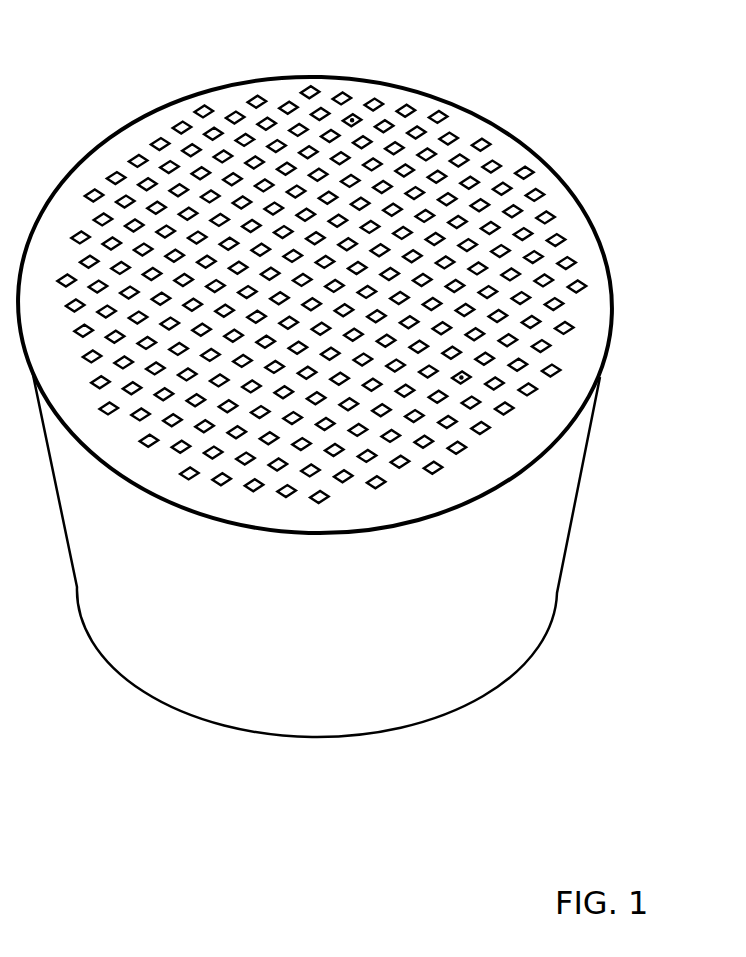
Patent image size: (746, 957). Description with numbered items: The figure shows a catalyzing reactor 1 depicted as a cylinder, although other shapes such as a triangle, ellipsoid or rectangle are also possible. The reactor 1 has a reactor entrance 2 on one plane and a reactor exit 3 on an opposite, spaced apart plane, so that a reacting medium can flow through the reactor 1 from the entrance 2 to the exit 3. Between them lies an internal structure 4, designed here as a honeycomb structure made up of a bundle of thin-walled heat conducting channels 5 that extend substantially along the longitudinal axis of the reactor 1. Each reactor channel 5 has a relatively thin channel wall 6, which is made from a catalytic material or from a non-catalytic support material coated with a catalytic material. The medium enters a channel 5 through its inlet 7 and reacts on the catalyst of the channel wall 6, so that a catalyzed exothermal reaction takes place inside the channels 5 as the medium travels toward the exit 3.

The catalyzing reactor 1 is at (363, 411).
The reactor entrance 2 is at (467, 135).
The reactor exit 3 is at (205, 720).
The internal structure 4 is at (219, 153).
The reactor channel 5 is at (353, 115).
The channel wall 6 is at (550, 341).
The inlet 7 is at (469, 381).